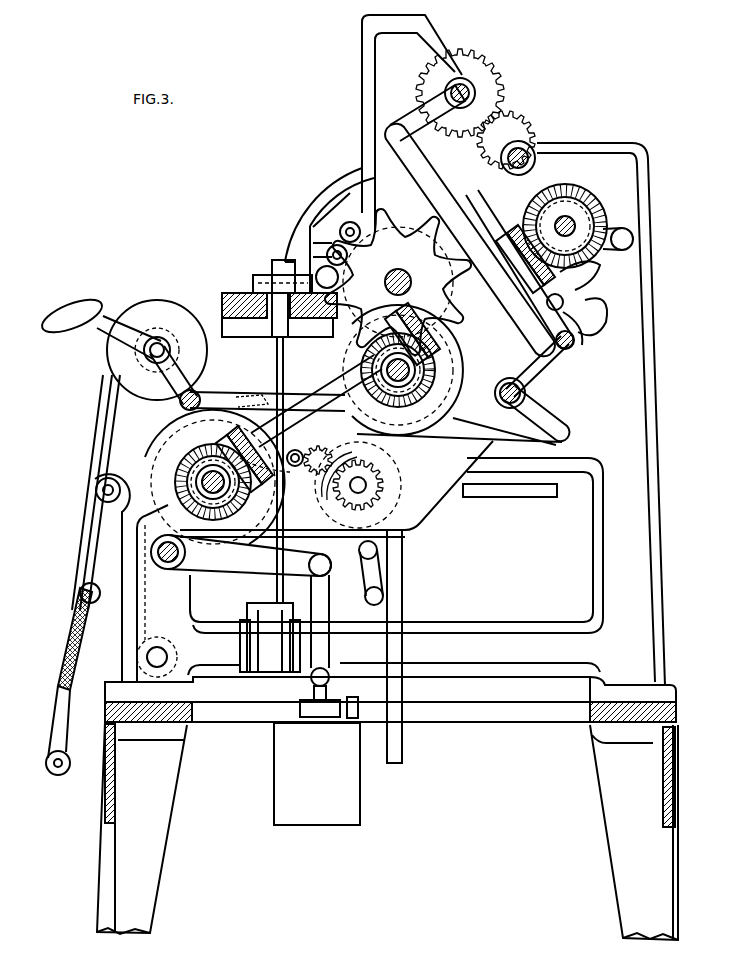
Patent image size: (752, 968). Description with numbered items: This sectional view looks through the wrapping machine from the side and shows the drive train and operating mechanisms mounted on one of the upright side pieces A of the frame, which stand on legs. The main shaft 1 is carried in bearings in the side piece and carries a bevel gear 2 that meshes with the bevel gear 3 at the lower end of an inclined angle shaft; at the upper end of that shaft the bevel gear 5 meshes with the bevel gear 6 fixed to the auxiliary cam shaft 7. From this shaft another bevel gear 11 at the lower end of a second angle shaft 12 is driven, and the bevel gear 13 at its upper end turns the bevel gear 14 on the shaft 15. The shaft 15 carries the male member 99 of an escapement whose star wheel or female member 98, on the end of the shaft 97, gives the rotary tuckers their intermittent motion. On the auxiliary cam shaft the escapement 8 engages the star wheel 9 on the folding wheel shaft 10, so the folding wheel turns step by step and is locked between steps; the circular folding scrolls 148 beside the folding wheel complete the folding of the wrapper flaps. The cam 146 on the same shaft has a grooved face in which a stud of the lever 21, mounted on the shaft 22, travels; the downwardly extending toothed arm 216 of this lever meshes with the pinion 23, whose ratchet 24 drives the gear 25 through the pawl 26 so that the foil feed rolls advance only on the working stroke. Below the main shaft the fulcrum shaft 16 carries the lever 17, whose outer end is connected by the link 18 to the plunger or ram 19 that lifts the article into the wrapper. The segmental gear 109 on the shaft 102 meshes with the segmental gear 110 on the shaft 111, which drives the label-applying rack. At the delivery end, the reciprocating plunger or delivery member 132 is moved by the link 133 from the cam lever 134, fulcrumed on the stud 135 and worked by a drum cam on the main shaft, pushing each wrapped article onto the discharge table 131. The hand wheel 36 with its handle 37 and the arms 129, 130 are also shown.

The main shaft 1 is at (187, 482).
The bevel gear 2 is at (262, 505).
The bevel gear 3 is at (235, 410).
The bevel gear 5 is at (300, 386).
The bevel gear 6 is at (452, 364).
The auxiliary cam shaft 7 is at (455, 351).
The escapement 8 is at (398, 282).
The star wheel 9 is at (393, 233).
The folding wheel shaft 10 is at (398, 269).
The bevel gear 11 is at (425, 316).
The angle shaft 12 is at (484, 300).
The bevel gear 13 is at (516, 226).
The bevel gear 14 is at (559, 186).
The shaft 15 is at (580, 211).
The fulcrum shaft 16 is at (165, 570).
The lever 17 is at (338, 567).
The link 18 is at (366, 592).
The plunger or ram 19 is at (407, 610).
The lever 21 is at (437, 487).
The shaft 22 is at (526, 392).
The pinion 23 is at (300, 400).
The ratchet 24 is at (333, 500).
The gear 25 is at (403, 490).
The pawl 26 is at (314, 473).
The hand wheel 36 is at (148, 308).
The handle 37 is at (60, 324).
The shaft 97 is at (582, 316).
The star wheel or female member 98 is at (590, 288).
The male member 99 is at (628, 229).
The shaft 102 is at (531, 152).
The segmental gear 109 is at (526, 126).
The segmental gear 110 is at (496, 88).
The shaft 111 is at (467, 80).
The lever arm 129 is at (455, 207).
The lever arm 130 is at (418, 108).
The discharge table 131 is at (222, 297).
The reciprocating plunger or delivery member 132 is at (273, 262).
The link 133 is at (265, 390).
The cam lever 134 is at (284, 350).
The stud 135 is at (247, 612).
The cam 146 is at (432, 438).
The circular folding scrolls 148 is at (310, 214).
The link 216 is at (483, 380).
The upright side pieces A is at (375, 477).